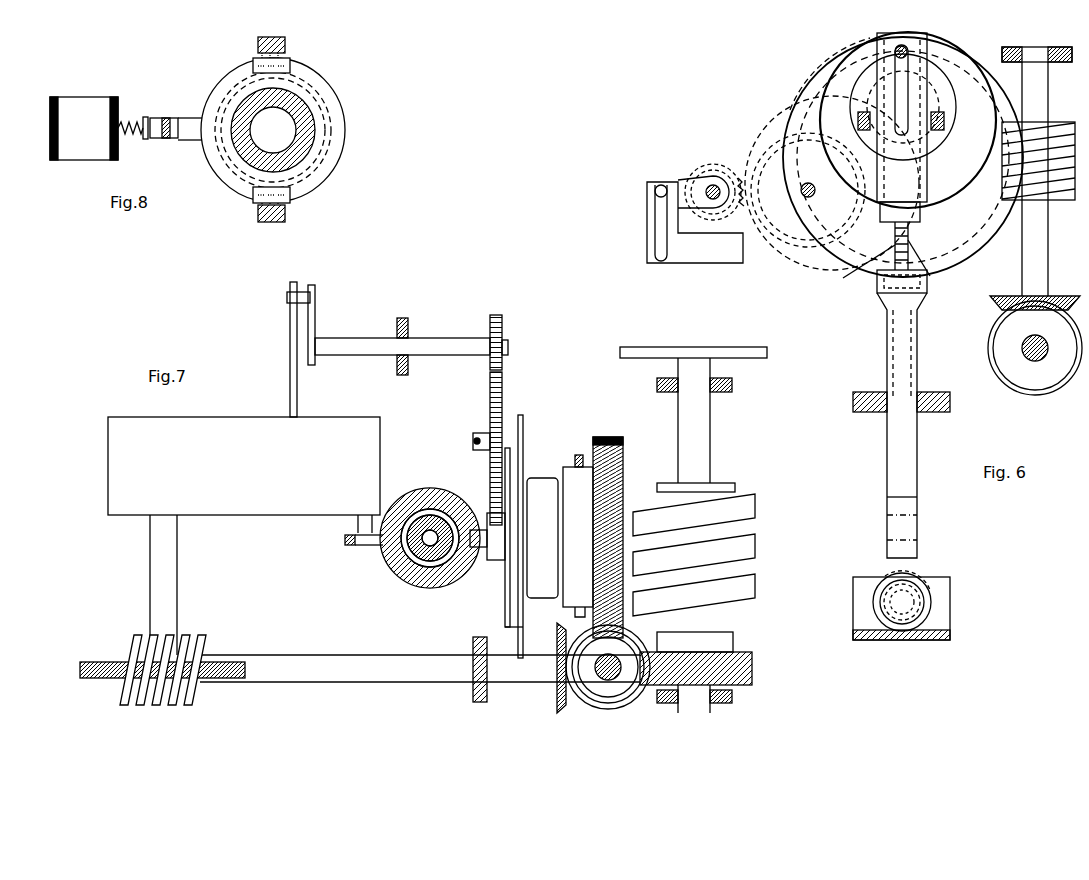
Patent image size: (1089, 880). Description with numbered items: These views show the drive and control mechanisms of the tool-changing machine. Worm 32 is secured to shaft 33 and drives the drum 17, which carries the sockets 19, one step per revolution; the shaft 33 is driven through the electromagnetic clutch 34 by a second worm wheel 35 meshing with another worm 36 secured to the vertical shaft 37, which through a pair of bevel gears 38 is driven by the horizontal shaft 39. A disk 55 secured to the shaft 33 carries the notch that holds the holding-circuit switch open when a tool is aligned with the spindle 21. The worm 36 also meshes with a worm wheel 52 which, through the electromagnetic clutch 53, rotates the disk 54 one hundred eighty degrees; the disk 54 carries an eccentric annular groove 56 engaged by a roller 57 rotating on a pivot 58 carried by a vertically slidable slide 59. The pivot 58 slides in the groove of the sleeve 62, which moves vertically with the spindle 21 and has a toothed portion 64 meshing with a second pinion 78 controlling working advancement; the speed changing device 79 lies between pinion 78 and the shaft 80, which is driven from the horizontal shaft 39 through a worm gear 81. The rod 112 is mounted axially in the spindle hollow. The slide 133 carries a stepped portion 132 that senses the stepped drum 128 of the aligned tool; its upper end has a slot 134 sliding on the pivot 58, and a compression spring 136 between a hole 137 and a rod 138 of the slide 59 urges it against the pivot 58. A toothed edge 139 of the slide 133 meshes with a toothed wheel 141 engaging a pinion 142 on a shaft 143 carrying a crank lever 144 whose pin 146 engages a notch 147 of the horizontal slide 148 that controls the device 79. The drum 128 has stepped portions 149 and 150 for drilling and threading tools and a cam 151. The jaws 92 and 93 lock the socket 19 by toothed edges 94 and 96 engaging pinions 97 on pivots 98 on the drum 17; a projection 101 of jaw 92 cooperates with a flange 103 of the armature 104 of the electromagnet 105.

In FIG. 8, the drum 17 is at (285, 43).
In FIG. 8, the socket 19 is at (303, 119).
In FIG. 7, the spindle 21 is at (427, 532).
In FIG. 7, the worm 32 is at (748, 526).
In FIG. 7, the shaft 33 is at (710, 436).
In FIG. 7, the electromagnetic clutch 34 is at (733, 636).
In FIG. 7, the second worm wheel 35 is at (752, 677).
In FIG. 7, the worm 36 is at (631, 654).
In FIG. 6, the worm 36 is at (1055, 190).
In FIG. 7, the vertical shaft 37 is at (616, 658).
In FIG. 6, the vertical shaft 37 is at (1043, 246).
In FIG. 7, the bevel gears 38 is at (557, 700).
In FIG. 6, the bevel gears 38 is at (1000, 306).
In FIG. 7, the horizontal shaft 39 is at (346, 676).
In FIG. 6, the horizontal shaft 39 is at (1033, 360).
In FIG. 7, the worm wheel 52 is at (624, 442).
In FIG. 6, the worm wheel 52 is at (957, 262).
In FIG. 7, the electromagnetic clutch 53 is at (569, 467).
In FIG. 7, the disk 54 is at (520, 467).
In FIG. 6, the disk 54 is at (990, 233).
In FIG. 7, the disk 55 is at (629, 357).
In FIG. 6, the annular groove 56 is at (960, 177).
In FIG. 6, the roller 57 is at (856, 44).
In FIG. 6, the pivot 58 is at (928, 44).
In FIG. 6, the slide 59 is at (925, 94).
In FIG. 7, the sleeve 62 is at (430, 577).
In FIG. 7, the toothed portion 64 is at (386, 548).
In FIG. 7, the second pinion 78 is at (344, 541).
In FIG. 7, the speed changing device 79 is at (215, 511).
In FIG. 7, the shaft 80 is at (177, 583).
In FIG. 7, the worm gear 81 is at (207, 692).
In FIG. 8, the jaw 92 is at (213, 156).
In FIG. 8, the jaw 93 is at (332, 141).
In FIG. 8, the toothed edges 94 is at (253, 65).
In FIG. 8, the toothed edges 96 is at (290, 66).
In FIG. 8, the pinions 97 is at (260, 56).
In FIG. 8, the pivots 98 is at (285, 56).
In FIG. 8, the projection 101 is at (187, 140).
In FIG. 8, the flange 103 is at (167, 118).
In FIG. 8, the armature 104 is at (145, 117).
In FIG. 8, the electromagnet 105 is at (80, 105).
In FIG. 7, the rod 112 is at (406, 558).
In FIG. 6, the stepped drum 128 is at (921, 597).
In FIG. 6, the stepped portion 132 is at (910, 527).
In FIG. 7, the slide 133 is at (495, 560).
In FIG. 6, the slide 133 is at (913, 178).
In FIG. 6, the slot 134 is at (898, 92).
In FIG. 6, the compression spring 136 is at (848, 279).
In FIG. 6, the hole 137 is at (917, 330).
In FIG. 6, the rod 138 is at (927, 279).
In FIG. 6, the toothed edge 139 is at (872, 52).
In FIG. 7, the toothed wheel 141 is at (502, 391).
In FIG. 6, the toothed wheel 141 is at (776, 240).
In FIG. 7, the pinion 142 is at (502, 329).
In FIG. 6, the pinion 142 is at (732, 168).
In FIG. 7, the shaft 143 is at (441, 341).
In FIG. 6, the shaft 143 is at (712, 185).
In FIG. 7, the crank lever 144 is at (315, 323).
In FIG. 6, the crank lever 144 is at (682, 180).
In FIG. 7, the pin 146 is at (290, 298).
In FIG. 6, the pin 146 is at (661, 185).
In FIG. 6, the notch 147 is at (658, 216).
In FIG. 7, the horizontal slide 148 is at (290, 379).
In FIG. 6, the horizontal slide 148 is at (688, 258).
In FIG. 6, the stepped portion 149 is at (870, 613).
In FIG. 6, the stepped portion 150 is at (930, 606).
In FIG. 6, the cam 151 is at (905, 573).